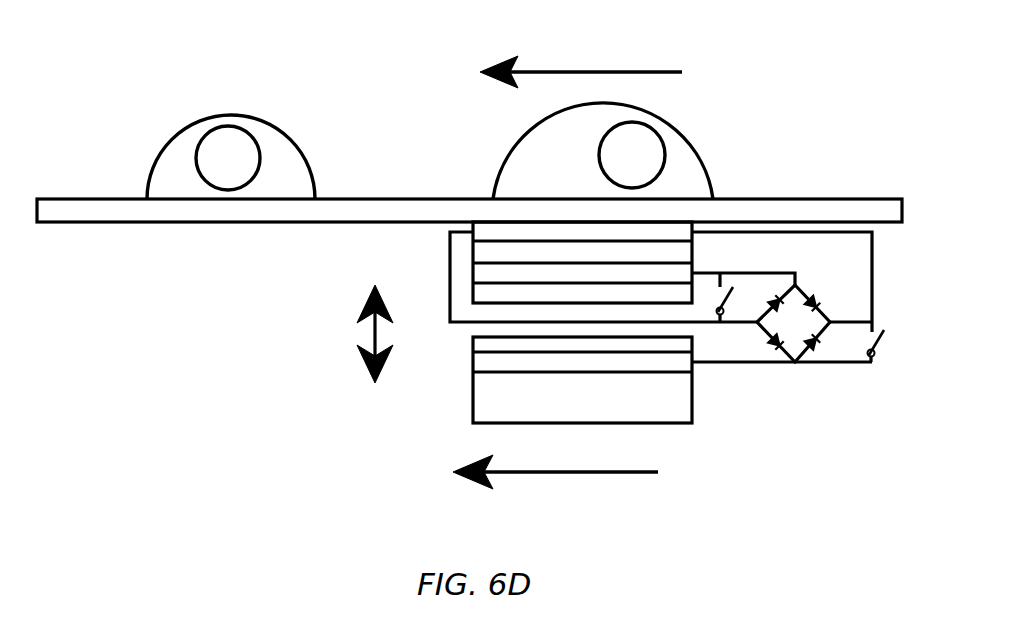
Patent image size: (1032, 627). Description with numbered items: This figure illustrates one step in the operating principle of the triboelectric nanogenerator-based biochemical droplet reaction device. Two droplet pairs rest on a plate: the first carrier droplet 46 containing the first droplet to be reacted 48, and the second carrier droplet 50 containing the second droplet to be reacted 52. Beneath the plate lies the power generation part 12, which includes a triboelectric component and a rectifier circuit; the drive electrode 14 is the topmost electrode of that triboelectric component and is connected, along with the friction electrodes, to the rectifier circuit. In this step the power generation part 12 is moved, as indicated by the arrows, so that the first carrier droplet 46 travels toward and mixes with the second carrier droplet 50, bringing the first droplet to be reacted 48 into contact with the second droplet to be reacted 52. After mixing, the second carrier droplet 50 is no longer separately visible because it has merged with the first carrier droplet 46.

The power generation part 12 is at (728, 388).
The drive electrode 14 is at (497, 230).
The first carrier droplet 46 is at (683, 178).
The first droplet to be reacted 48 is at (623, 158).
The second carrier droplet 50 is at (278, 168).
The second droplet to be reacted 52 is at (228, 155).